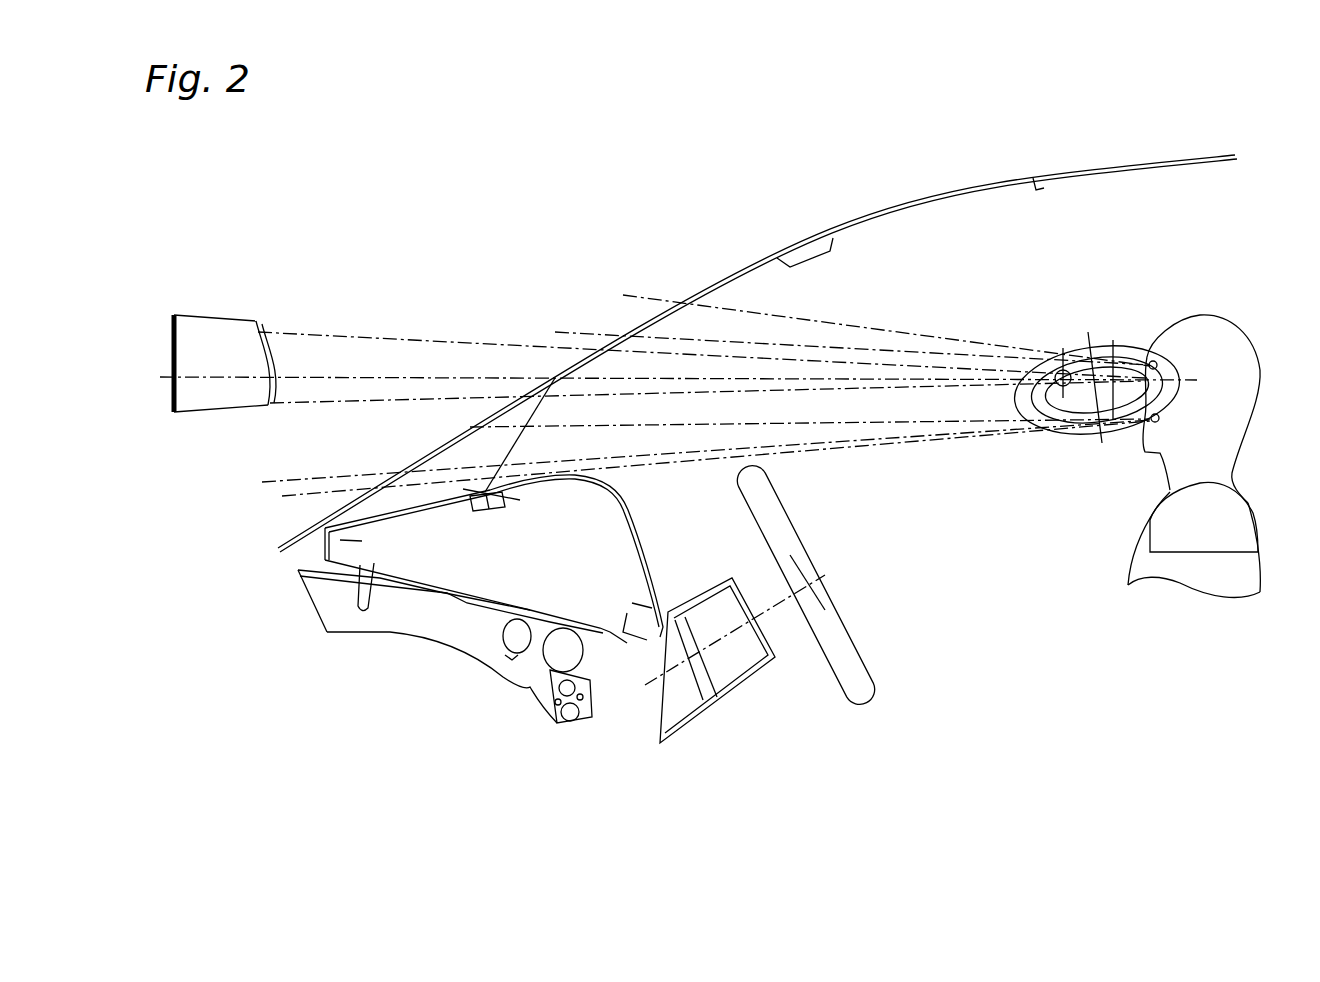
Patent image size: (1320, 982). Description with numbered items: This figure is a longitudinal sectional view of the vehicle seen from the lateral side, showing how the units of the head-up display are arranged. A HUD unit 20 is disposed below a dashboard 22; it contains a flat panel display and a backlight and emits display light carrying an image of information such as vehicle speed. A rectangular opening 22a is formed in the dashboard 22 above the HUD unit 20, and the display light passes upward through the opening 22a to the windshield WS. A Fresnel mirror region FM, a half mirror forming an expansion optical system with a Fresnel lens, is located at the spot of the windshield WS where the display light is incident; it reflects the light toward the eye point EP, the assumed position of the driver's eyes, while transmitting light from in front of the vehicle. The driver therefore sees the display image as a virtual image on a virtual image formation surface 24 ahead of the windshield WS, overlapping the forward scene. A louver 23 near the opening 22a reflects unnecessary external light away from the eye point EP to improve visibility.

The head-up display (HUD) unit 20 is at (478, 507).
The dashboard 22 is at (340, 543).
The opening 22a is at (482, 490).
The louver 23 is at (514, 507).
The virtual image formation surface 24 is at (175, 338).
The windshield WS is at (751, 258).
The Fresnel mirror region FM is at (598, 334).
The eye point EP is at (1142, 358).